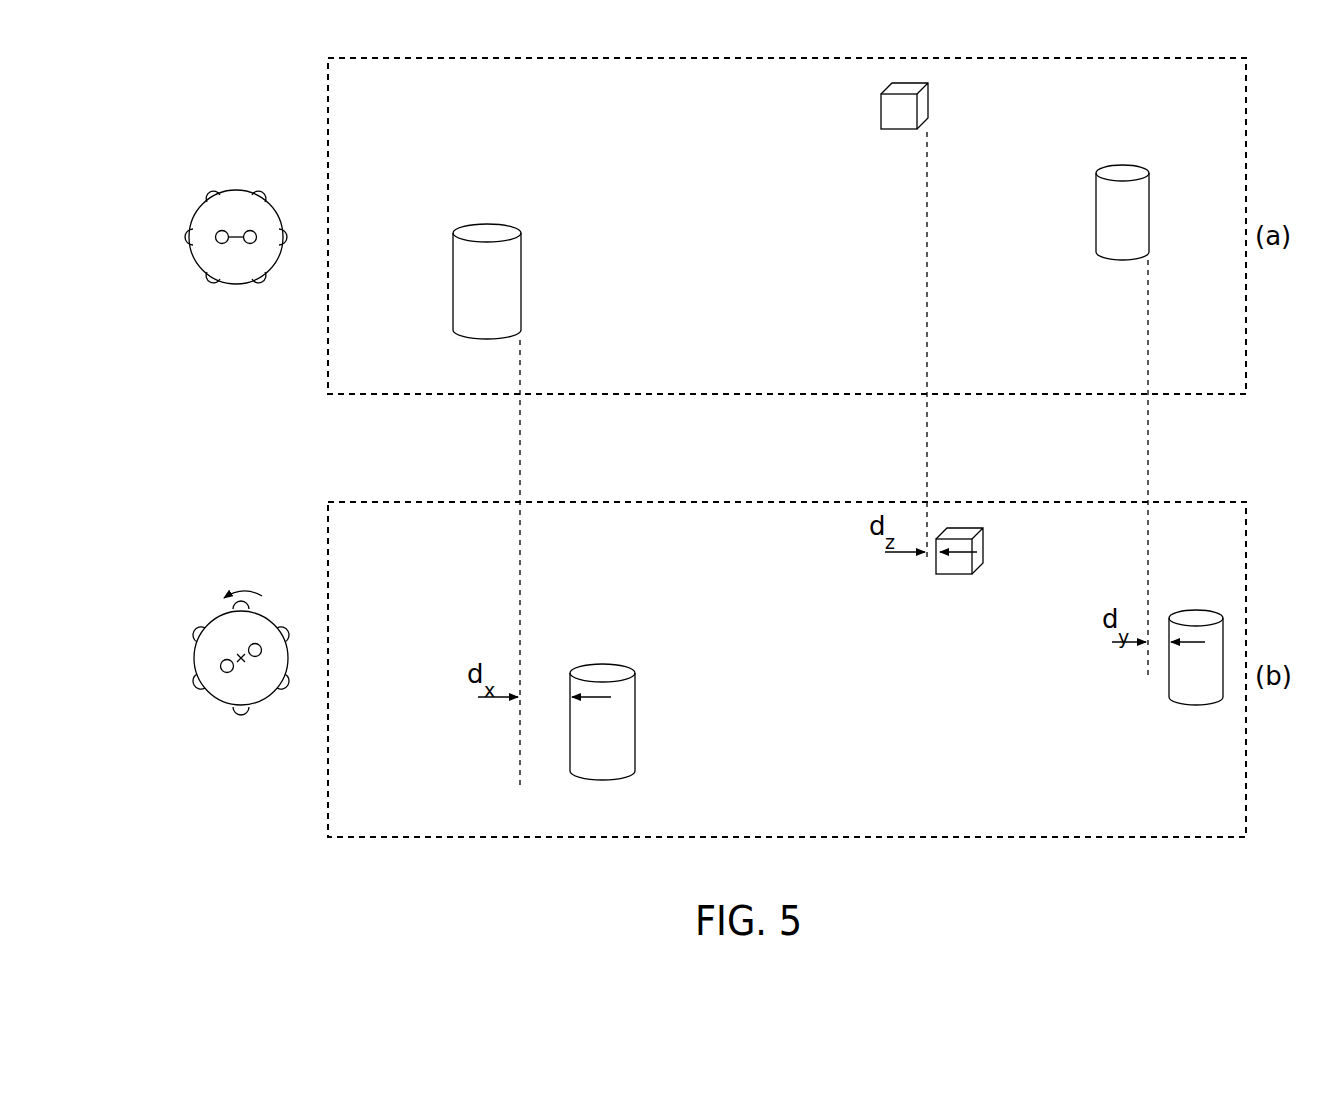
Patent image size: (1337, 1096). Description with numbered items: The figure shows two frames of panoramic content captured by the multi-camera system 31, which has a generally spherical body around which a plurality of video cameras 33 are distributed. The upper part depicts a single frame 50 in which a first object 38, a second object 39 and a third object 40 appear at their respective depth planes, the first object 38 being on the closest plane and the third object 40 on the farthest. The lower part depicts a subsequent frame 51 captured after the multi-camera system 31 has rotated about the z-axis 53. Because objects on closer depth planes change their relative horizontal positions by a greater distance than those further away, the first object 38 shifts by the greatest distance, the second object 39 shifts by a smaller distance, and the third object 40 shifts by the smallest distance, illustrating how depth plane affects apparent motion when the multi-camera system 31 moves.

The frame 50 is at (445, 57).
The subsequent frame 51 is at (445, 500).
The multi-camera system 31 is at (220, 416).
The video cameras 33 is at (207, 197).
The z-axis 53 is at (237, 240).
The first object 38 is at (503, 313).
The second object 39 is at (1138, 240).
The third object 40 is at (880, 104).